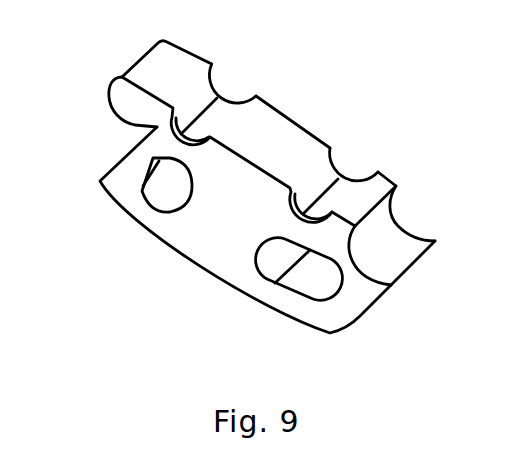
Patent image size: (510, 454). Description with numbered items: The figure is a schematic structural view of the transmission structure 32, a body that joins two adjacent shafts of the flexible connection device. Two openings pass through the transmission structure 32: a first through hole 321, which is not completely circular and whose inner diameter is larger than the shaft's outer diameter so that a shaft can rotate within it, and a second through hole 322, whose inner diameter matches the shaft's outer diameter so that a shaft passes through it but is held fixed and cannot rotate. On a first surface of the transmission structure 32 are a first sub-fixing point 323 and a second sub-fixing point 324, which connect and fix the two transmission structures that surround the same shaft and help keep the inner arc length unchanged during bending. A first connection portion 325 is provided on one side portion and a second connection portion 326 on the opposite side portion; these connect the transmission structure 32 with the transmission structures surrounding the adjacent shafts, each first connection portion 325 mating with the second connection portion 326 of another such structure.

The transmission structure 32 is at (272, 147).
The first through hole 321 is at (313, 273).
The second through hole 322 is at (170, 189).
The first sub-fixing point 323 is at (353, 181).
The second sub-fixing point 324 is at (228, 100).
The first connection portion 325 is at (406, 248).
The second connection portion 326 is at (127, 102).